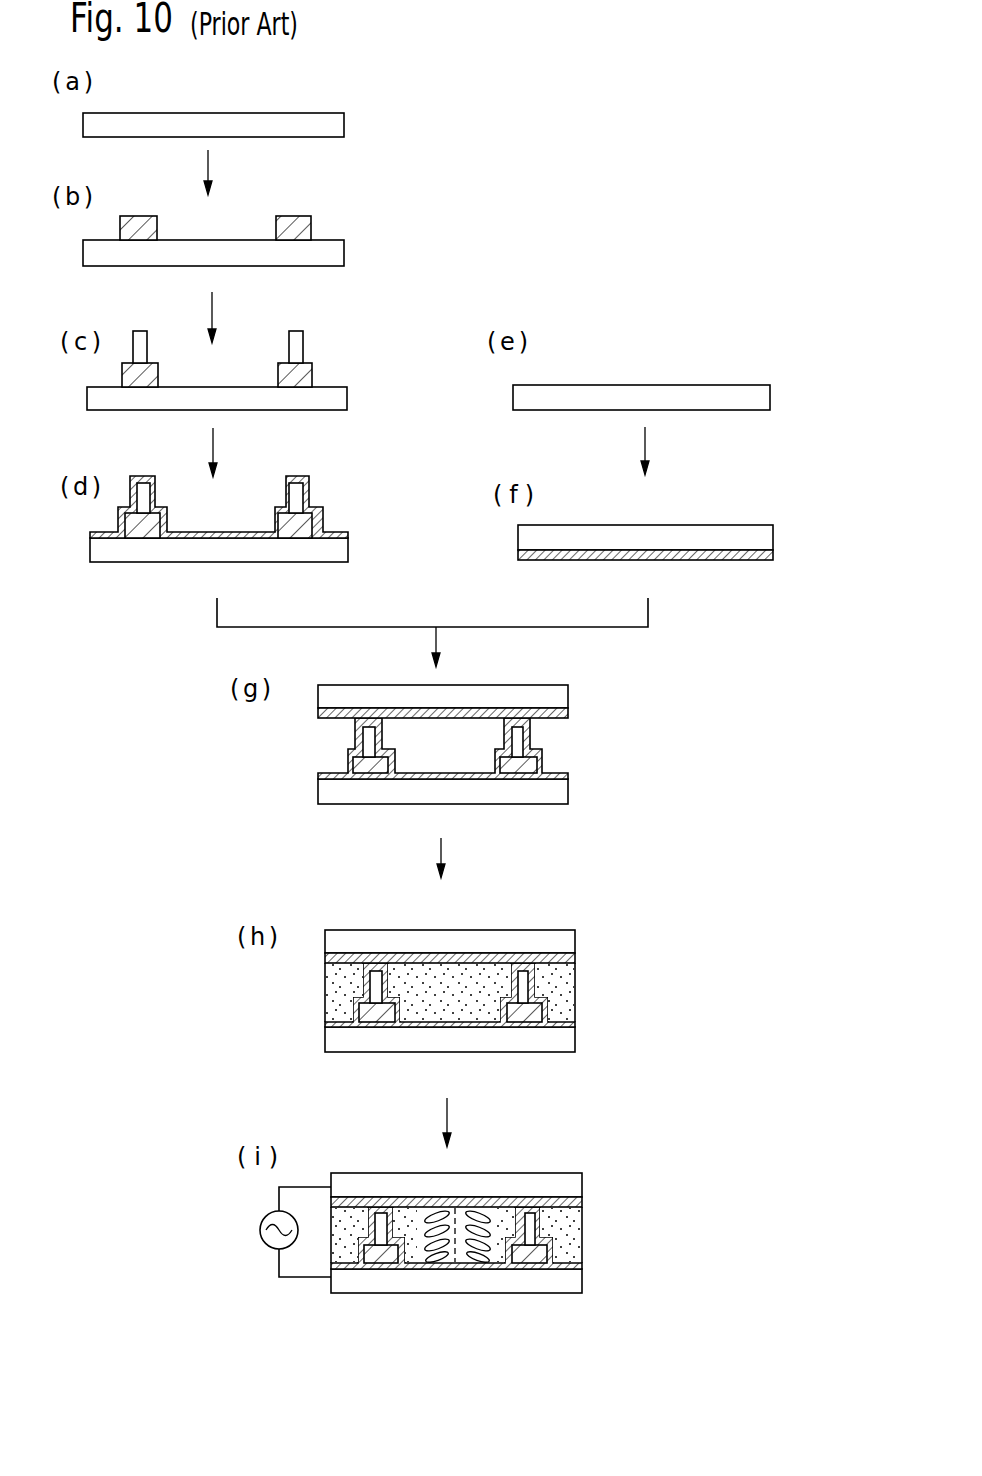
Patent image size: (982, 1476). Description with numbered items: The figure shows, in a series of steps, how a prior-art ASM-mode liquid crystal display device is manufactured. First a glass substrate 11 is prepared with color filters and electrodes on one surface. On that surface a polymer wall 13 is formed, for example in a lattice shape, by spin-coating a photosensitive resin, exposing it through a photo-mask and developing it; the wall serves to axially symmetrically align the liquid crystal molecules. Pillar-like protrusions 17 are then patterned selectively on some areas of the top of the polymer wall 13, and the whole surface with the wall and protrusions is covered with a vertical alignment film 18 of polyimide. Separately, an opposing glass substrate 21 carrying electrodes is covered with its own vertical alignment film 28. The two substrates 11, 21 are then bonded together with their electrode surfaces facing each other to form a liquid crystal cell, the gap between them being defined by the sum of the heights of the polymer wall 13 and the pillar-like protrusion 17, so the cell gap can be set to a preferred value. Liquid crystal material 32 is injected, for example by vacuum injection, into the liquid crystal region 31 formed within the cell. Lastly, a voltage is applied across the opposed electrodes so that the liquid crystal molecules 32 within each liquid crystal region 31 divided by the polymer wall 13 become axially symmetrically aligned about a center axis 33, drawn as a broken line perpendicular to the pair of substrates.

The glass substrate 11 is at (335, 126).
The polymer wall 13 is at (305, 222).
The pillar-like protrusion 17 is at (297, 347).
The vertical alignment film 18 is at (300, 478).
The opposing glass substrate 21 is at (715, 395).
The vertical alignment film 28 is at (712, 558).
The liquid crystal region 31 is at (420, 1003).
The liquid crystal material 32 is at (480, 1253).
The center axis 33 is at (455, 1245).